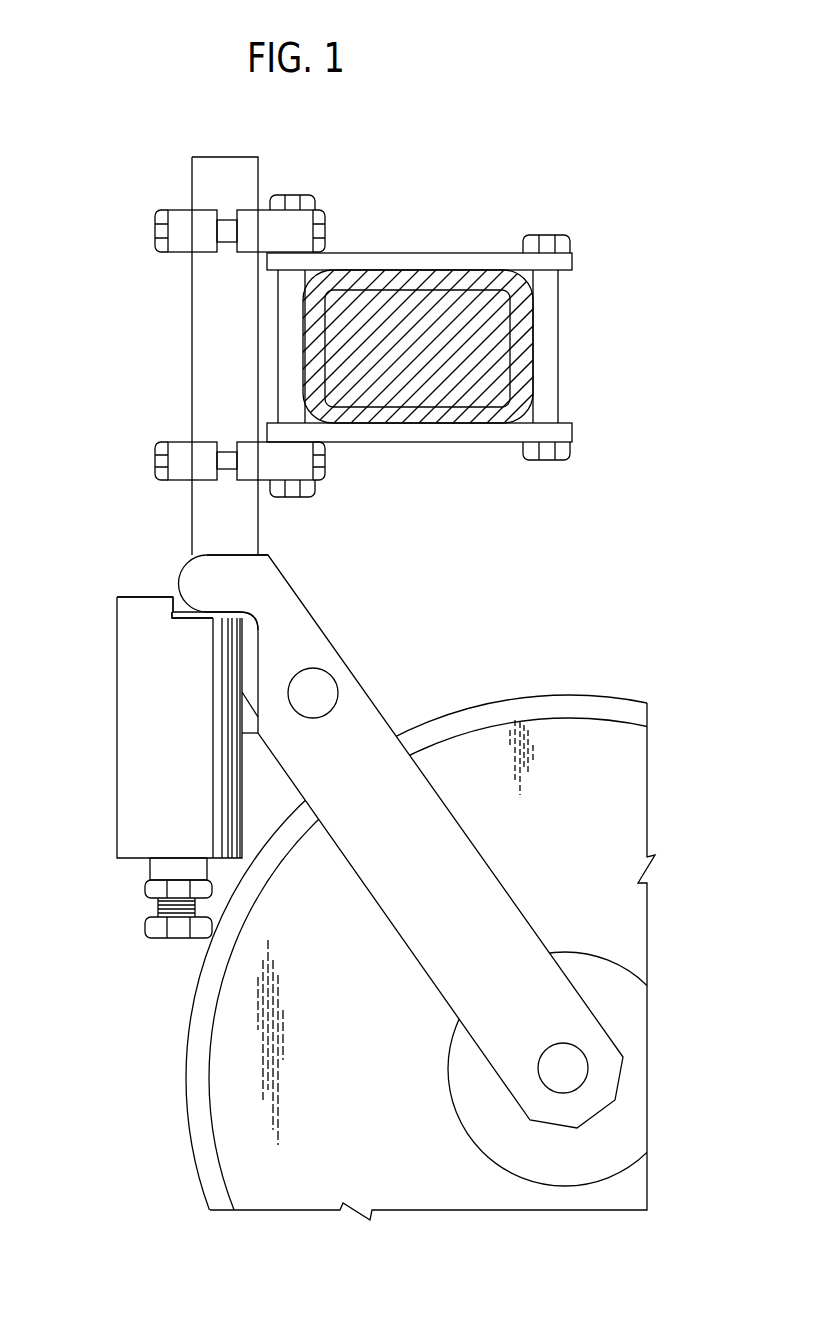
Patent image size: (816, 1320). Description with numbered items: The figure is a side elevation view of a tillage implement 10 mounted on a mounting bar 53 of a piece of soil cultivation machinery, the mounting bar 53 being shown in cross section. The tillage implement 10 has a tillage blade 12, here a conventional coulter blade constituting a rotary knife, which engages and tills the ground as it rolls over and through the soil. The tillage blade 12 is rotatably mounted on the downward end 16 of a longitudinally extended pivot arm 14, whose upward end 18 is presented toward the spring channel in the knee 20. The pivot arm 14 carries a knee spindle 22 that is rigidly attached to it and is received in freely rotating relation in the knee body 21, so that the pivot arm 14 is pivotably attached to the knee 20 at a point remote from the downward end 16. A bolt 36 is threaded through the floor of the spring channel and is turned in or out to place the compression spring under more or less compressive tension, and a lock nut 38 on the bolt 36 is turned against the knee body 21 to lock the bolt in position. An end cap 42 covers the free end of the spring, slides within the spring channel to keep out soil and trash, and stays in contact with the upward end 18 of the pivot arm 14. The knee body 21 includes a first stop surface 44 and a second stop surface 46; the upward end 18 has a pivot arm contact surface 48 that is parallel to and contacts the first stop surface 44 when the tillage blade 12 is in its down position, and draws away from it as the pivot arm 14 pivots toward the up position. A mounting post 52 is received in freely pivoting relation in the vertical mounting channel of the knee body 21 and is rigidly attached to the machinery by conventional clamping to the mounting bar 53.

The tillage implement 10 is at (115, 760).
The tillage blade 12 is at (188, 1090).
The pivot arm 14 is at (488, 862).
The downward end 16 is at (512, 1098).
The upward end 18 is at (277, 567).
The knee 20 is at (117, 673).
The knee body 21 is at (117, 623).
The knee spindle 22 is at (327, 690).
The bolt 36 is at (143, 932).
The lock nut 38 is at (145, 888).
The end cap 42 is at (183, 613).
The first stop surface 44 is at (258, 728).
The second stop surface 46 is at (245, 700).
The pivot arm contact surface 48 is at (260, 635).
The mounting post 52 is at (192, 500).
The mounting bar 53 is at (465, 292).